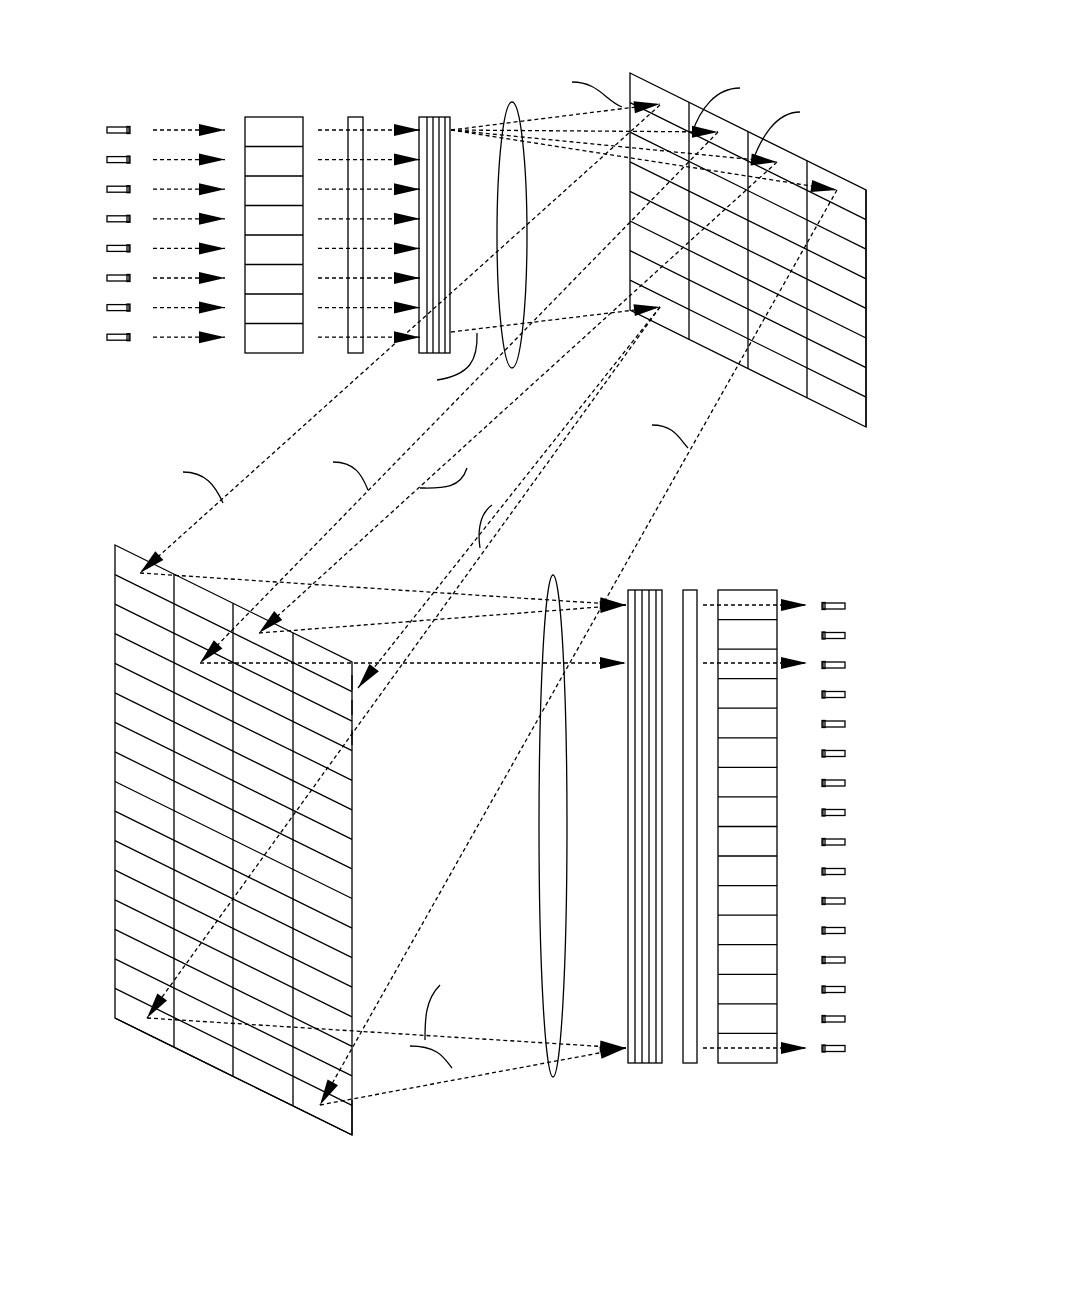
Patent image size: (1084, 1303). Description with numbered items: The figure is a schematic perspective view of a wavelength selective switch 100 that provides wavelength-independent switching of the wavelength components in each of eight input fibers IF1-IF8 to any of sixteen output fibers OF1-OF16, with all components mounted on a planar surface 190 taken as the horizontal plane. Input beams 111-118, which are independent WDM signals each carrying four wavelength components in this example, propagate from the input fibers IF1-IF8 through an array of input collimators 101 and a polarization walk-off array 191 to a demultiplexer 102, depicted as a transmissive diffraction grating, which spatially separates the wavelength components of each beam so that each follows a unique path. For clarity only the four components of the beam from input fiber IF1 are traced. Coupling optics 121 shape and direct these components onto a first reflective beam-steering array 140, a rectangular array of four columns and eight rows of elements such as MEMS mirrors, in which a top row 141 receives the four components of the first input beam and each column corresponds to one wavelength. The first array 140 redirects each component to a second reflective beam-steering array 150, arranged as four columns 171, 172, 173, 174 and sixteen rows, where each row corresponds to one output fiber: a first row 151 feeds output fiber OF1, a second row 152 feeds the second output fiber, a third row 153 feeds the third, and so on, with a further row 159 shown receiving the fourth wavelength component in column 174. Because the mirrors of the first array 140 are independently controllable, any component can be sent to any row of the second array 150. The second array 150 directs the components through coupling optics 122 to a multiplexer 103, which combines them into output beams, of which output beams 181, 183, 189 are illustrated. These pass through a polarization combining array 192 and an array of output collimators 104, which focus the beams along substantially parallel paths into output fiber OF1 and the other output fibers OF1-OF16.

The wavelength selective switch 100 is at (783, 73).
The array of input collimators 101 is at (278, 117).
The demultiplexer 102 is at (437, 117).
The multiplexer 103 is at (650, 590).
The array of output collimators 104 is at (755, 590).
The input beams 111-118 is at (192, 117).
The coupling optics 121 is at (513, 103).
The coupling optics 122 is at (556, 575).
The first reflective beam-steering array 140 is at (837, 170).
The top row 141 is at (876, 210).
The second reflective beam-steering array 150 is at (140, 555).
The first row 151 is at (360, 682).
The second row 152 is at (357, 707).
The third row 153 is at (358, 737).
The row 159 is at (364, 1131).
The column 171 is at (137, 1045).
The column 172 is at (200, 1072).
The column 173 is at (260, 1103).
The column 174 is at (318, 1127).
The output beam 181 is at (792, 611).
The output beam 183 is at (800, 663).
The output beam 189 is at (793, 1053).
The planar surface 190 is at (588, 1125).
The polarization walk-off array 191 is at (357, 117).
The polarization combining array 192 is at (693, 590).
The input fiber IF1 is at (112, 127).
The input fibers IF1-IF8 is at (123, 372).
The output fiber OF1 is at (837, 603).
The output fibers OF1-OF16 is at (835, 1070).